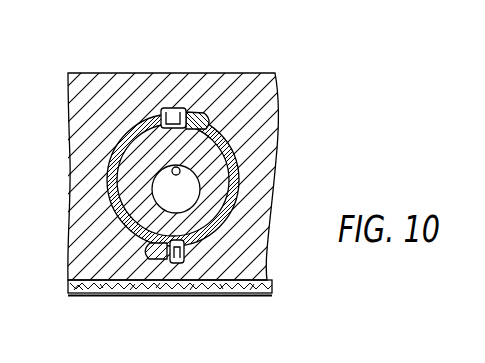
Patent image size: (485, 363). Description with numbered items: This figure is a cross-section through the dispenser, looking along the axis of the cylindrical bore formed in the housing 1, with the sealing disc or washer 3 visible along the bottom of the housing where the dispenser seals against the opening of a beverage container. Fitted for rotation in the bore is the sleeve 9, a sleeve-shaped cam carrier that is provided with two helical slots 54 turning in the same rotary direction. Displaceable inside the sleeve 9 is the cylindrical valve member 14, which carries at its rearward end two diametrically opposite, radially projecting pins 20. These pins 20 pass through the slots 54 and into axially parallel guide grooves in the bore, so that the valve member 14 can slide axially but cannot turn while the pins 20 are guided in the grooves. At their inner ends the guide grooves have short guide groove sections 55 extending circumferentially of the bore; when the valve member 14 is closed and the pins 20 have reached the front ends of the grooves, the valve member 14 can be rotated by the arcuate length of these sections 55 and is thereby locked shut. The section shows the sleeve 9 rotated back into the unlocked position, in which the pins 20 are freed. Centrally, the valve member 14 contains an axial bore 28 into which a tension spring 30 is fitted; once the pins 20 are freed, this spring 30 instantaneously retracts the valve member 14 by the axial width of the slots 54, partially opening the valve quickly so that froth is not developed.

The housing 1 is at (263, 120).
The sealing disc or washer 3 is at (268, 292).
The sleeve 9 is at (240, 192).
The valve member 14 is at (150, 240).
The pins 20 is at (170, 112).
The axial bore 28 is at (168, 203).
The tension spring 30 is at (172, 179).
The helical slots 54 is at (188, 113).
The guide groove sections 55 is at (203, 122).